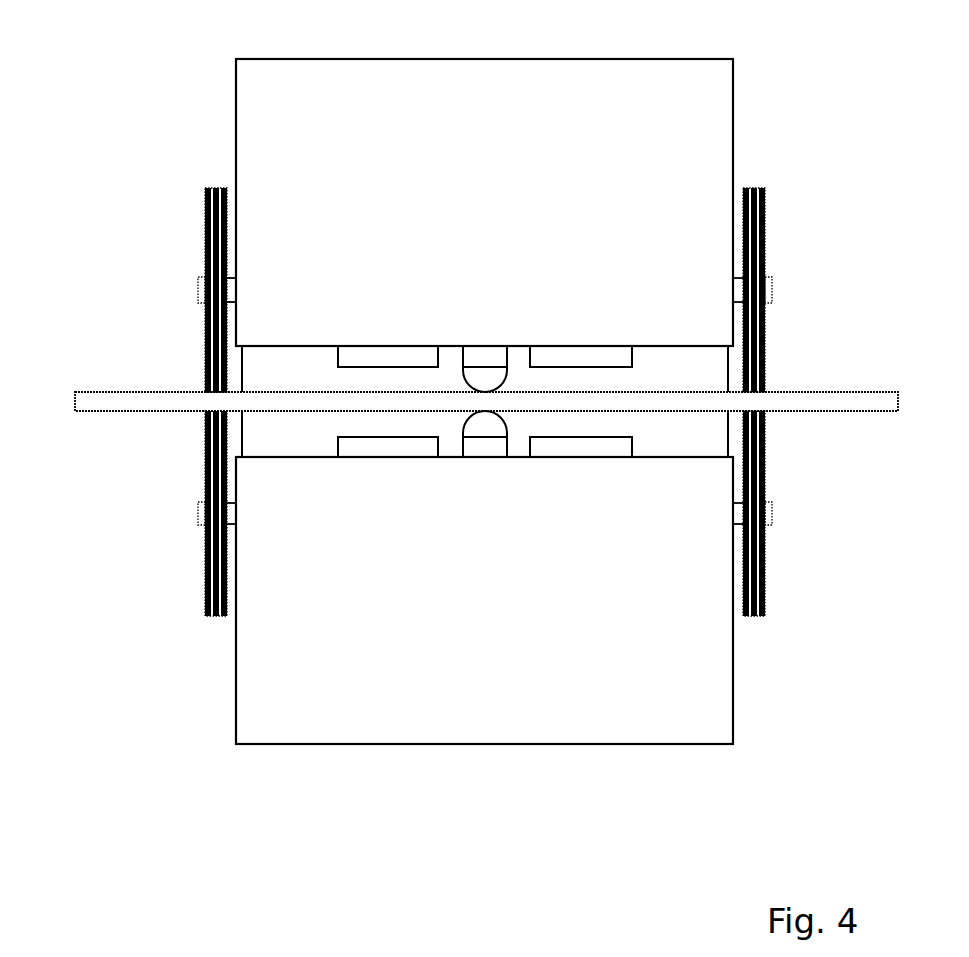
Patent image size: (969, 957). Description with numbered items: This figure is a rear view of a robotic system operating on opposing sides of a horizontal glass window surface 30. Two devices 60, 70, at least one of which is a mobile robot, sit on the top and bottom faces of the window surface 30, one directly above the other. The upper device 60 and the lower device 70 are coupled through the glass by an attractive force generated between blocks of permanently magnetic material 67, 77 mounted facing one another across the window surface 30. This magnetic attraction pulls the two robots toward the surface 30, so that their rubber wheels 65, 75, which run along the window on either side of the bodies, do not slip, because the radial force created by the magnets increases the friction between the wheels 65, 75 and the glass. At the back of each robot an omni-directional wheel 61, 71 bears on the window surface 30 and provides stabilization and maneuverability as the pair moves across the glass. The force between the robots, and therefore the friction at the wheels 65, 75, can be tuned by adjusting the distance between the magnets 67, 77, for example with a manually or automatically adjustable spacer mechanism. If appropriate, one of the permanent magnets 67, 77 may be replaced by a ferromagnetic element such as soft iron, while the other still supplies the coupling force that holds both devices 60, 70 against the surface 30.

The glass window surface 30 is at (132, 402).
The device 60 is at (261, 131).
The omni-directional wheel 61 is at (483, 370).
The rubber wheel 65 is at (207, 248).
The block of permanently magnetic material 67 is at (398, 358).
The device 70 is at (260, 673).
The omni-directional wheel 71 is at (487, 432).
The rubber wheel 75 is at (207, 560).
The block of permanently magnetic material 77 is at (398, 449).